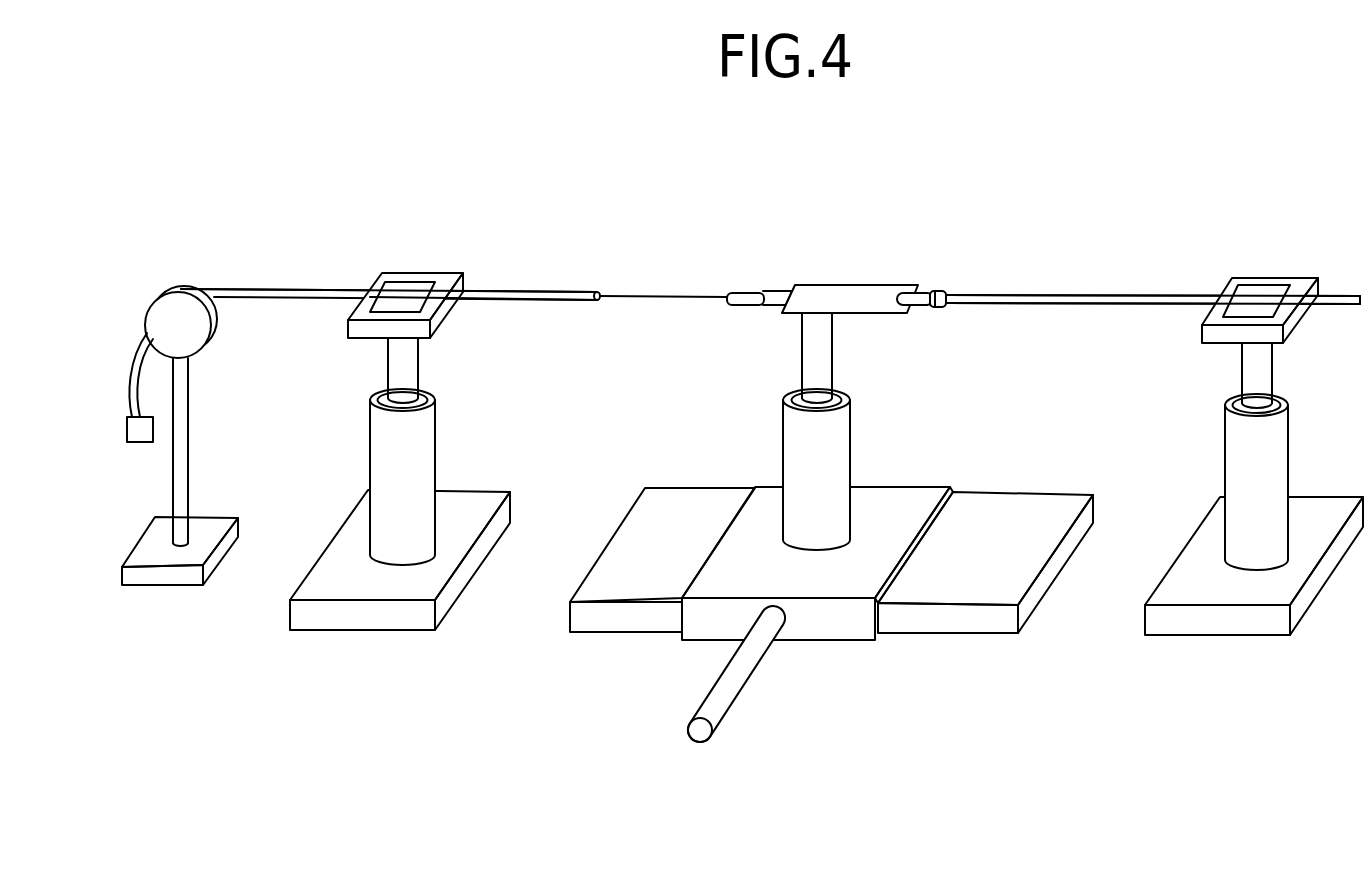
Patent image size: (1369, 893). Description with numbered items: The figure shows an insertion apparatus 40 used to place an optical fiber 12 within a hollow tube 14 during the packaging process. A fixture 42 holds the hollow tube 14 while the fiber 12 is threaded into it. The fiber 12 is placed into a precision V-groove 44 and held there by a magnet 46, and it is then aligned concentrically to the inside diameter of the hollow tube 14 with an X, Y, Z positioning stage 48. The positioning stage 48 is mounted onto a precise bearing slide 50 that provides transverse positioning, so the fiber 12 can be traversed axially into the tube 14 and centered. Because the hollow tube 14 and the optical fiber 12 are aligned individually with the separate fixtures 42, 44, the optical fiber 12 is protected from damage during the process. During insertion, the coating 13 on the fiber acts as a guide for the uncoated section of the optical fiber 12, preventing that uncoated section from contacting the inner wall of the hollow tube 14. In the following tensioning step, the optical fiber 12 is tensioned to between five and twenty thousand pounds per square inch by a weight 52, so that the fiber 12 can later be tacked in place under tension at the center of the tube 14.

The optical fiber 12 is at (632, 298).
The coating 13 is at (555, 292).
The hollow tube 14 is at (767, 310).
The insertion apparatus 40 is at (1038, 166).
The fixture 42 is at (848, 283).
The precision V-groove 44 is at (447, 300).
The magnet 46 is at (407, 292).
The X,Y,Z positioning stage 48 is at (916, 450).
The bearing slide 50 is at (845, 640).
The weight 52 is at (131, 442).